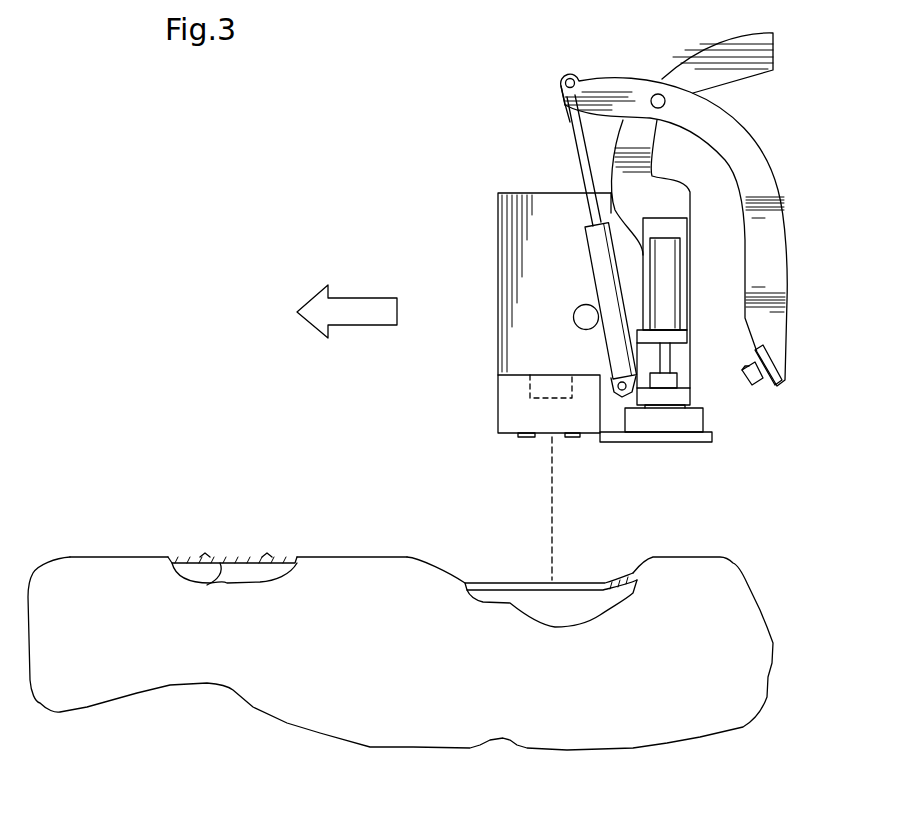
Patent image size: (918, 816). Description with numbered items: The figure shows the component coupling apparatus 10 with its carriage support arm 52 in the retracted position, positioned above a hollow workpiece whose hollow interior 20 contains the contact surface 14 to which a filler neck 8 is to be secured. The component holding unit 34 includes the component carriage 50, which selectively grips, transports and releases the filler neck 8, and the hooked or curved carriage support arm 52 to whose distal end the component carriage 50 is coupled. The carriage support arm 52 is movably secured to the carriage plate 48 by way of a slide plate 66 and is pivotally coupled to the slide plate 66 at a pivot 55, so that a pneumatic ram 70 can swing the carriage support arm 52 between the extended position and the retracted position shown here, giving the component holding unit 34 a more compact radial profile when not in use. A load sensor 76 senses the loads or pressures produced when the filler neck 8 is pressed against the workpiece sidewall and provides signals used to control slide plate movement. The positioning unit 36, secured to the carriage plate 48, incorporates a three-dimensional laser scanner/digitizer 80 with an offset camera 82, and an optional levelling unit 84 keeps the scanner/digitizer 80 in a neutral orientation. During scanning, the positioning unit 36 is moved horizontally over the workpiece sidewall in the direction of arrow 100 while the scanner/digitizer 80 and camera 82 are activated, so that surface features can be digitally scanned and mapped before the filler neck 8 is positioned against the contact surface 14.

The component coupling apparatus 10 is at (440, 228).
The pivot 55 is at (657, 93).
The carriage support arm 52 is at (742, 152).
The pneumatic ram 70 is at (598, 258).
The slide plate 66 is at (686, 243).
The carriage plate 48 is at (553, 343).
The filler neck 8 is at (735, 378).
The levelling unit 84 is at (530, 382).
The component holding unit 34 is at (678, 351).
The component carriage 50 is at (762, 384).
The positioning unit 36 is at (513, 420).
The offset camera 82 is at (525, 438).
The laser scanner/digitizer 80 is at (570, 438).
The load sensor 76 is at (697, 425).
The arrow 100 is at (355, 317).
The contact surface 14 is at (207, 582).
The hollow interior 20 is at (681, 691).